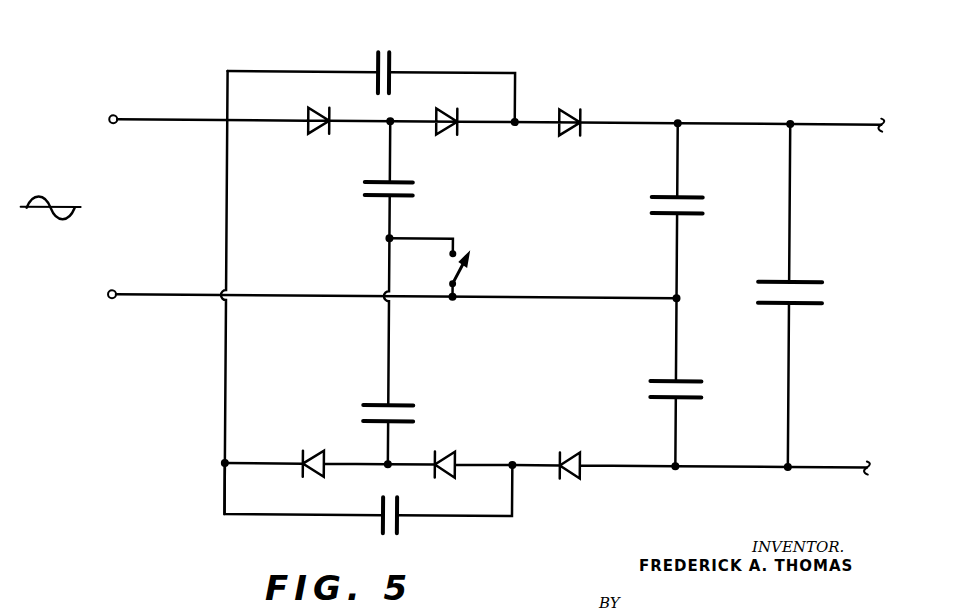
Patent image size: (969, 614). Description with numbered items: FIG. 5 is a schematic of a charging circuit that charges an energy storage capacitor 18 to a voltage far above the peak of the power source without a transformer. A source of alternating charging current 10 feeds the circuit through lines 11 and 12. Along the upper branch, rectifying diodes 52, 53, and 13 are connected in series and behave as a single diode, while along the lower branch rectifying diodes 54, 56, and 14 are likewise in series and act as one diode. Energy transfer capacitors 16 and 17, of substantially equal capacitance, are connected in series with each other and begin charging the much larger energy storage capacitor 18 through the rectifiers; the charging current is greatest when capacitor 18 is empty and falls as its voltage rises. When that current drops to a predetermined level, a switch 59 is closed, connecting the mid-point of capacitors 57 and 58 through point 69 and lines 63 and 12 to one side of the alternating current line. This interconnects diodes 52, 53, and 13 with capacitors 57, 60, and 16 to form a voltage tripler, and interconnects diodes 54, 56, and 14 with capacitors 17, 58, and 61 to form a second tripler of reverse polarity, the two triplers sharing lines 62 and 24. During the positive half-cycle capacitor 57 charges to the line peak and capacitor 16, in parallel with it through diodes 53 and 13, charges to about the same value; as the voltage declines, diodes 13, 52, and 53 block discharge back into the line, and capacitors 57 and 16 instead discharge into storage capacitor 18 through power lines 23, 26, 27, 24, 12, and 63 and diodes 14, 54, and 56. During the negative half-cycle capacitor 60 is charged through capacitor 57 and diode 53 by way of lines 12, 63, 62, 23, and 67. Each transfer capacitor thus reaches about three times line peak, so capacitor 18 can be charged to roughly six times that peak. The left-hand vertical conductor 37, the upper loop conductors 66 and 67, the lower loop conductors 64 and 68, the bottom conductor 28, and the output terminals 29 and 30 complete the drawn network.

The source of alternating charging current 10 is at (50, 222).
The line 11 is at (163, 120).
The line 12 is at (152, 297).
The rectifying diode 13 is at (572, 114).
The rectifying diode 14 is at (568, 482).
The energy transfer capacitor 16 is at (690, 206).
The energy transfer capacitor 17 is at (700, 393).
The energy storage capacitor 18 is at (810, 292).
The power line 23 is at (638, 122).
The line 24 is at (680, 322).
The power line 26 is at (753, 121).
The power line 27 is at (792, 373).
The conductor 28 is at (637, 470).
The output terminal 29 is at (845, 104).
The output terminal 30 is at (817, 468).
The conductor 37 is at (226, 393).
The rectifying diode 52 is at (316, 134).
The rectifying diode 53 is at (448, 134).
The rectifying diode 54 is at (317, 450).
The rectifying diode 56 is at (455, 457).
The capacitor 57 is at (363, 185).
The capacitor 58 is at (410, 412).
The switch 59 is at (452, 267).
The capacitor 60 is at (382, 52).
The capacitor 61 is at (390, 533).
The line 62 is at (389, 354).
The line 63 is at (428, 237).
The conductor 64 is at (262, 516).
The conductor 66 is at (297, 73).
The line 67 is at (487, 74).
The conductor 68 is at (473, 516).
The connection point 69 is at (452, 302).